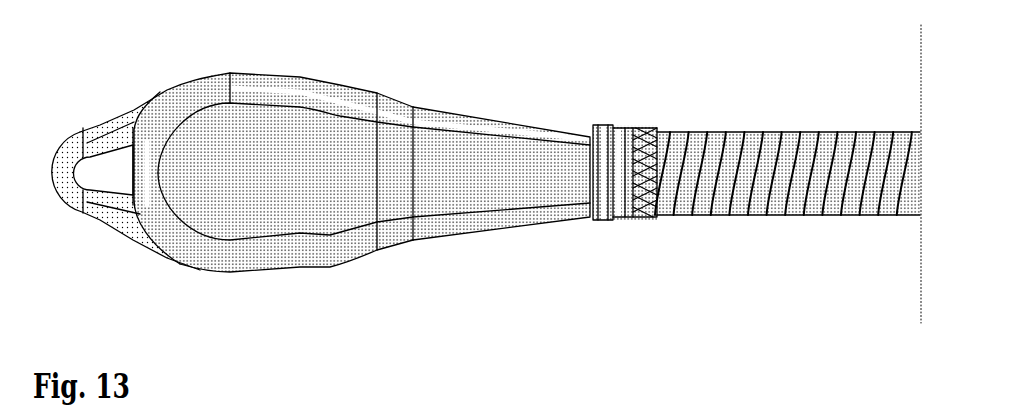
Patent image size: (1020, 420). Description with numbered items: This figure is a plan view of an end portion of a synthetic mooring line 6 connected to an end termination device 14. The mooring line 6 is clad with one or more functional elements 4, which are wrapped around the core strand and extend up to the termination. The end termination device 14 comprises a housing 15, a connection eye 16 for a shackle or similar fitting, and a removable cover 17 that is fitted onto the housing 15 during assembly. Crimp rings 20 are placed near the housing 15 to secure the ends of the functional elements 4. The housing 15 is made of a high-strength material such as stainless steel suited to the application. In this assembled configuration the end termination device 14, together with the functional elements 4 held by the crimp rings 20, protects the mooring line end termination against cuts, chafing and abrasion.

The functional element 4 is at (792, 130).
The mooring line 6 is at (832, 245).
The end termination device 14 is at (408, 285).
The housing 15 is at (339, 84).
The connection eye 16 is at (75, 130).
The removable cover 17 is at (277, 252).
The crimp ring 20 is at (640, 130).